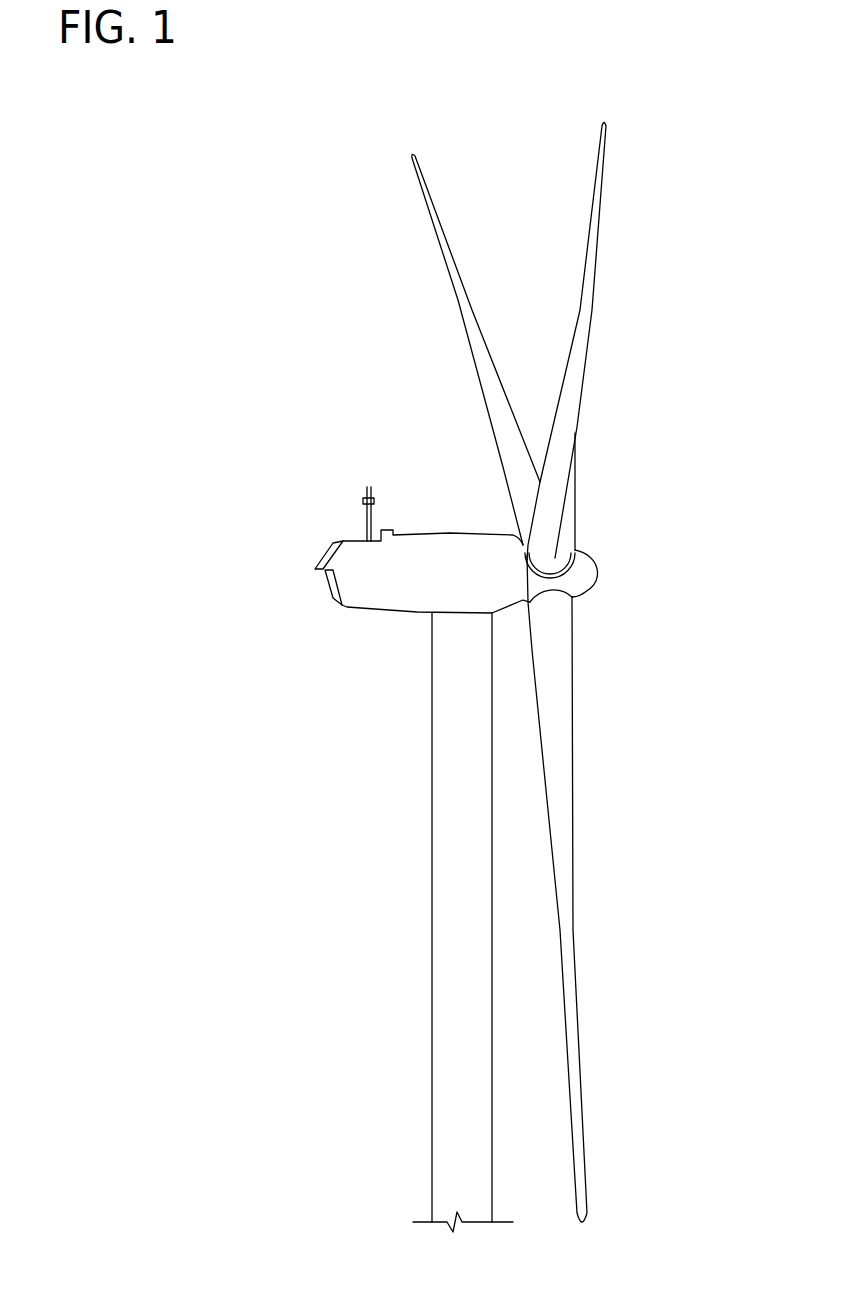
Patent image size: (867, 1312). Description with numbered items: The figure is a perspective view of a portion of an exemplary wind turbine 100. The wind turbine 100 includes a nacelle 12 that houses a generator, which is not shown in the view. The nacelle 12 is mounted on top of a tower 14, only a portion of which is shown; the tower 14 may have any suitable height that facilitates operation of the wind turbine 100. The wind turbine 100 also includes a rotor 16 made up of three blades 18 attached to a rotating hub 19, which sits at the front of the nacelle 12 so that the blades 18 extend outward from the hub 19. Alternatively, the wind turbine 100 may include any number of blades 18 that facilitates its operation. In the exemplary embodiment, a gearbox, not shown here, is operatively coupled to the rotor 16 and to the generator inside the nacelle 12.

The wind turbine 100 is at (308, 202).
The nacelle 12 is at (367, 610).
The tower 14 is at (432, 872).
The rotor 16 is at (642, 327).
The blade 18 is at (447, 237).
The rotating hub 19 is at (588, 586).